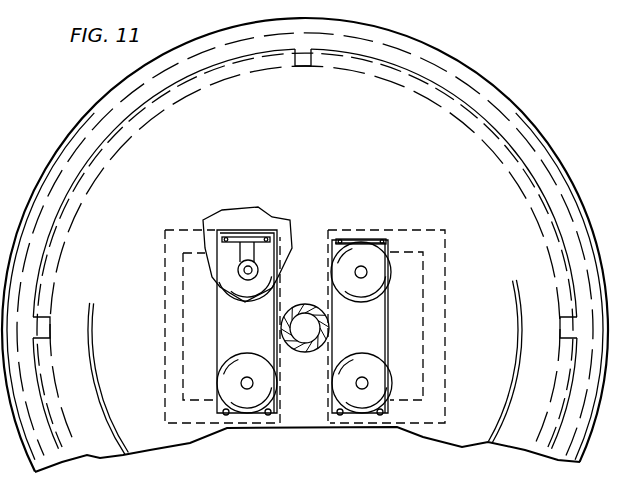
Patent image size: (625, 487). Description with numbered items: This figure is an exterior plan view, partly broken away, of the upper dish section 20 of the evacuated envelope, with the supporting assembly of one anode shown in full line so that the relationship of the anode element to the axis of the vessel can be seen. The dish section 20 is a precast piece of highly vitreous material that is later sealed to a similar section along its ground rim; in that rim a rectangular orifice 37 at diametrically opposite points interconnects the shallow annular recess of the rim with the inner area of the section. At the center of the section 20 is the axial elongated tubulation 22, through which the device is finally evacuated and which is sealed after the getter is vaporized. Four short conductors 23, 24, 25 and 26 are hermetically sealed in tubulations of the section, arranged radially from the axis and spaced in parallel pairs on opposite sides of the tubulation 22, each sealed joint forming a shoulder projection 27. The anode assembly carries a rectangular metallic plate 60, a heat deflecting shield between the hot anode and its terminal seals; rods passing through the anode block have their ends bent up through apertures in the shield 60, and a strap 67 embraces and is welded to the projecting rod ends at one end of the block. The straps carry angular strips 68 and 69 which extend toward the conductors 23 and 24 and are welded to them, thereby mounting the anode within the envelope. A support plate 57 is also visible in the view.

The dish section 20 is at (490, 82).
The rectangular orifice 37 is at (305, 58).
The rectangular metallic plate 60 is at (258, 223).
The strap 67 is at (243, 237).
The angular strip 69 is at (262, 270).
The angular strip 68 is at (238, 268).
The support plate 57 is at (327, 272).
The conductor 24 is at (247, 291).
The conductor 26 is at (360, 279).
The conductor 23 is at (248, 377).
The conductor 25 is at (362, 377).
The shoulder projection 27 is at (217, 382).
The axial elongated tubulation 22 is at (305, 352).